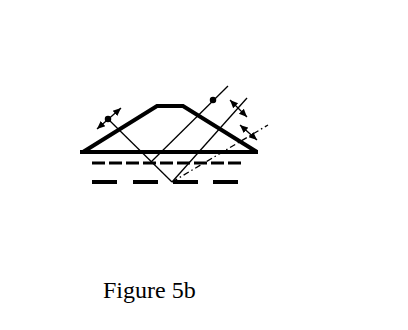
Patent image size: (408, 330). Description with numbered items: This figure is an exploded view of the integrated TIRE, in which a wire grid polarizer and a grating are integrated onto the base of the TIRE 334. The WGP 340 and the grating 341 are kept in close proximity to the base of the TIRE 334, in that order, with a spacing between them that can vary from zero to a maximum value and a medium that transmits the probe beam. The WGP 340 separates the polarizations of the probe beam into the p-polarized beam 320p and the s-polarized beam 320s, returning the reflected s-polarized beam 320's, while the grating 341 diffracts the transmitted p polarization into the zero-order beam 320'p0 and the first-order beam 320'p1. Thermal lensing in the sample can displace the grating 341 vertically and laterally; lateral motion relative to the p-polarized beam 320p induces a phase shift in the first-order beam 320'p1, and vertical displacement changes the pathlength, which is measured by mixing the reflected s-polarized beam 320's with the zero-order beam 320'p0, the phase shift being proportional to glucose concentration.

The TIRE 334 is at (149, 106).
The WGP 340 is at (247, 166).
The grating 341 is at (225, 188).
The p-polarized probe beam 320p is at (116, 108).
The s-polarized probe beam 320s is at (105, 119).
The reflected s-polarized beam 320's is at (205, 107).
The zero-order diffracted p-polarized beam 320'p0 is at (273, 99).
The first-order diffracted p-polarized beam 320'p1 is at (251, 153).